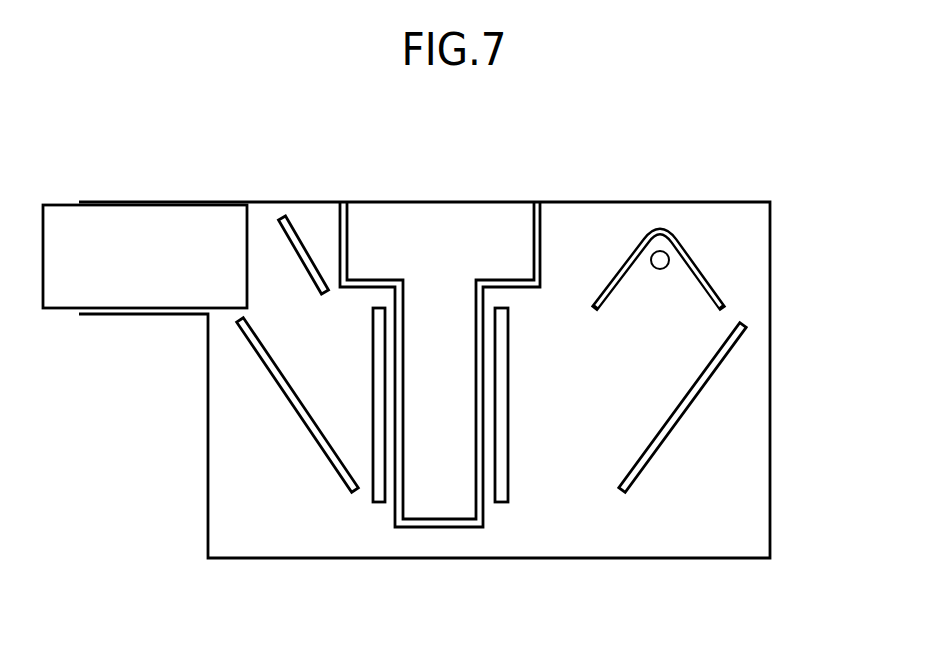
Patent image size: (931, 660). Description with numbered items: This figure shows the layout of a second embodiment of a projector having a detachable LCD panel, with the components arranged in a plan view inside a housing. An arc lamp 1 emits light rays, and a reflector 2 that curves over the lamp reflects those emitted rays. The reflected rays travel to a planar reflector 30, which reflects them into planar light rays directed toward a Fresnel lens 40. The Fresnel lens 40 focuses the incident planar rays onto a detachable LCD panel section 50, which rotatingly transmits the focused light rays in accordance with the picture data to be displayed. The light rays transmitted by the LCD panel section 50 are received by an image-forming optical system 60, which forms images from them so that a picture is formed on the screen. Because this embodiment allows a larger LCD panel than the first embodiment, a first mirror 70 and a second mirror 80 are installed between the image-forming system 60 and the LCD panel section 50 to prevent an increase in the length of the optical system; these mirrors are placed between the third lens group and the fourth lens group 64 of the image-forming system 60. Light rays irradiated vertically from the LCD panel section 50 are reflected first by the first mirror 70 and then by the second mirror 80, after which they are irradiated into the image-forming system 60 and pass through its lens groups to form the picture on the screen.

The arc lamp 1 is at (663, 250).
The reflector 2 is at (710, 273).
The planar reflector 30 is at (705, 378).
The Fresnel lens 40 is at (500, 504).
The detachable LCD panel section 50 is at (442, 212).
The image-forming optical system 60 is at (145, 225).
The fourth lens group 64 is at (378, 503).
The first mirror 70 is at (288, 406).
The second mirror 80 is at (307, 243).